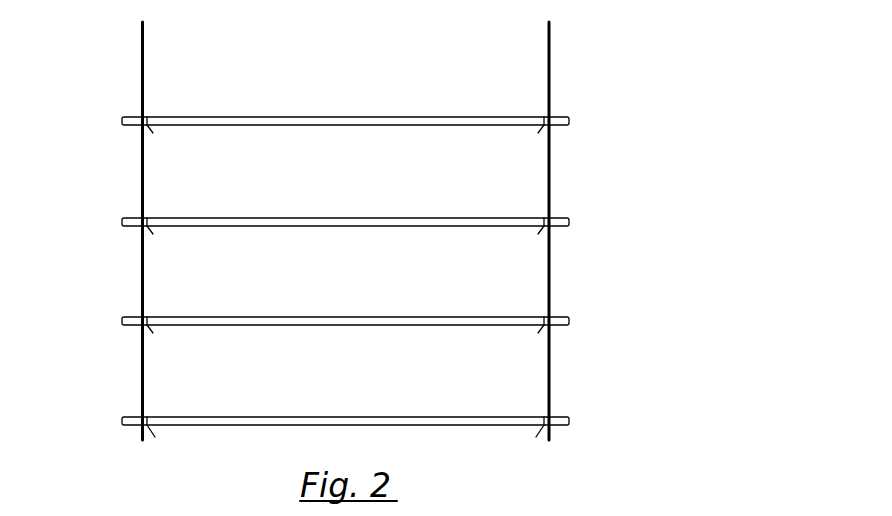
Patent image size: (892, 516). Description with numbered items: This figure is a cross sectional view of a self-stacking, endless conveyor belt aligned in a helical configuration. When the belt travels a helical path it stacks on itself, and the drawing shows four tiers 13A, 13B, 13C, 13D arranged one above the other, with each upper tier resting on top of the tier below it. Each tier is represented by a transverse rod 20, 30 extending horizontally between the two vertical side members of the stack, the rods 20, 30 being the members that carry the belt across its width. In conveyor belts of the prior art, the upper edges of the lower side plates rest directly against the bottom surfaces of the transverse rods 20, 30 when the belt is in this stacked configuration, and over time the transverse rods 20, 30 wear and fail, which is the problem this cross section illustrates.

The tier 13A is at (298, 106).
The tier 13B is at (126, 208).
The tier 13C is at (126, 307).
The tier 13D is at (126, 407).
The transverse rod 20 is at (345, 107).
The transverse rod 30 is at (288, 120).